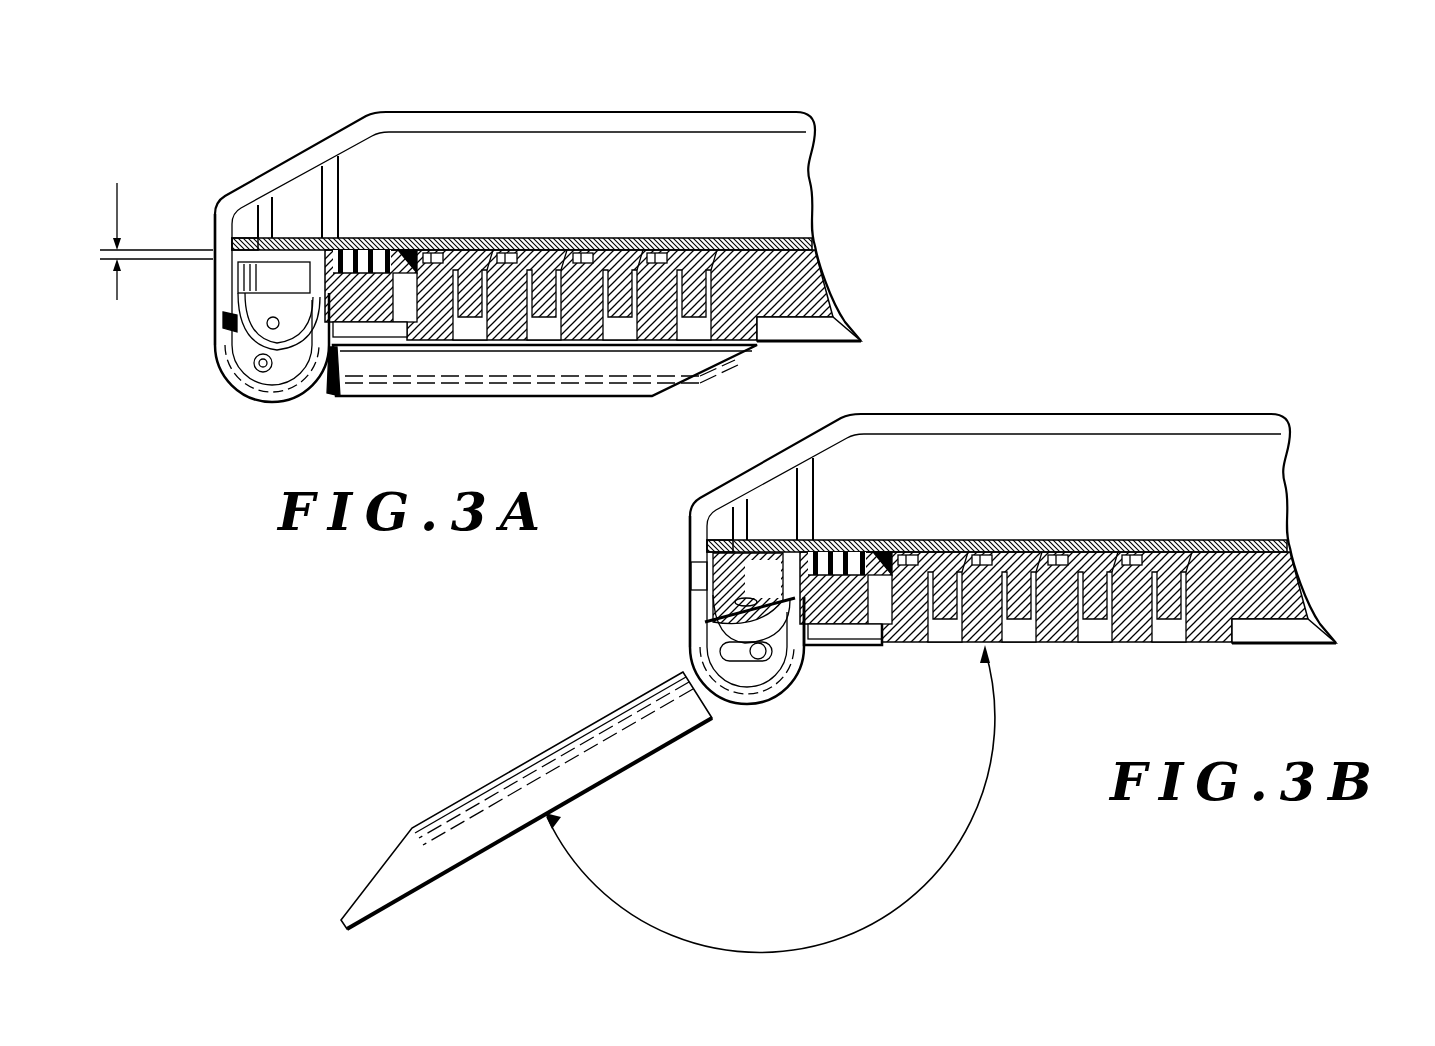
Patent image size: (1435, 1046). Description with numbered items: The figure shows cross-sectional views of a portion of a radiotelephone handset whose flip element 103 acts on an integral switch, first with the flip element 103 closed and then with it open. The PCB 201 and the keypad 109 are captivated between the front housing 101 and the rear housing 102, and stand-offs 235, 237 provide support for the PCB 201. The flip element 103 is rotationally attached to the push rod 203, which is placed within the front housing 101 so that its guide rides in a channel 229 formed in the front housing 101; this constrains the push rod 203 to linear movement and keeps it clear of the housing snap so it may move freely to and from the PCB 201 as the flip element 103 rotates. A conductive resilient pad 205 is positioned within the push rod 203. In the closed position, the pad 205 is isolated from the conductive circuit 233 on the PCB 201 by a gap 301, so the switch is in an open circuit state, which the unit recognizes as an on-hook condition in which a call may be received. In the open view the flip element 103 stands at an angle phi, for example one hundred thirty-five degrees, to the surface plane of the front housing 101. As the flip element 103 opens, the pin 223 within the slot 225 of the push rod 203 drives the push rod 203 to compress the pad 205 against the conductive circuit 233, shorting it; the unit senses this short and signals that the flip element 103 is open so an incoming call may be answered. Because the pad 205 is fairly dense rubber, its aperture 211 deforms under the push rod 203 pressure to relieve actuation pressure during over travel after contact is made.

In FIG. 3A, the front housing 101 is at (797, 327).
In FIG. 3B, the front housing 101 is at (1247, 627).
In FIG. 3A, the rear housing 102 is at (610, 123).
In FIG. 3B, the rear housing 102 is at (1060, 425).
In FIG. 3A, the flip element 103 is at (578, 395).
In FIG. 3B, the flip element 103 is at (597, 783).
In FIG. 3A, the keypad 109 is at (797, 281).
In FIG. 3B, the keypad 109 is at (1247, 575).
In FIG. 3A, the PCB 201 is at (788, 237).
In FIG. 3B, the PCB 201 is at (1197, 533).
In FIG. 3A, the push rod 203 is at (243, 288).
In FIG. 3B, the push rod 203 is at (712, 587).
In FIG. 3A, the pad 205 is at (238, 296).
In FIG. 3B, the pad 205 is at (712, 576).
In FIG. 3A, the aperture 211 is at (270, 325).
In FIG. 3B, the aperture 211 is at (727, 613).
In FIG. 3A, the pin 223 is at (257, 398).
In FIG. 3B, the pin 223 is at (777, 650).
In FIG. 3A, the slot 225 is at (305, 408).
In FIG. 3B, the slot 225 is at (733, 677).
In FIG. 3A, the channel 229 is at (240, 373).
In FIG. 3A, the conductive circuit 233 is at (257, 243).
In FIG. 3B, the conductive circuit 233 is at (733, 543).
In FIG. 3A, the stand-off 235 is at (287, 190).
In FIG. 3B, the stand-off 235 is at (755, 510).
In FIG. 3A, the stand-off 237 is at (342, 174).
In FIG. 3B, the stand-off 237 is at (817, 477).
In FIG. 3A, the gap 301 is at (155, 224).
In FIG. 3B, the gap 301 is at (987, 707).